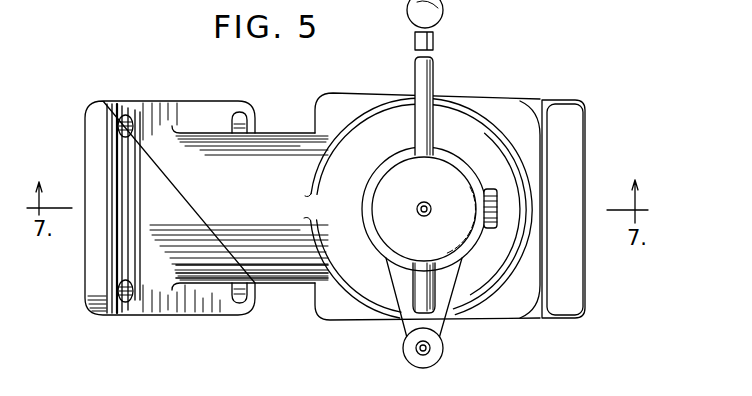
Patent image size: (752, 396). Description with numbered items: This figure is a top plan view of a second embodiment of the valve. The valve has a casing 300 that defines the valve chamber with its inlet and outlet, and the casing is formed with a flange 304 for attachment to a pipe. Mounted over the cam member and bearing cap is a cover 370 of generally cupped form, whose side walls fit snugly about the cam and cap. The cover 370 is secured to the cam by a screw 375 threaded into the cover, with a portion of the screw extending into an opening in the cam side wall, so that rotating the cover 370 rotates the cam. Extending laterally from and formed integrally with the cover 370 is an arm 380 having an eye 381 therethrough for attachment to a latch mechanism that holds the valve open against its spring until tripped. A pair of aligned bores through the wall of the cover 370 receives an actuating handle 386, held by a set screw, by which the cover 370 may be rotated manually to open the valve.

The casing 300 is at (279, 298).
The flange 304 is at (88, 283).
The cover 370 is at (363, 185).
The screw 375 is at (494, 189).
The arm 380 is at (403, 300).
The eye 381 is at (428, 351).
The actuating handle 386 is at (433, 68).